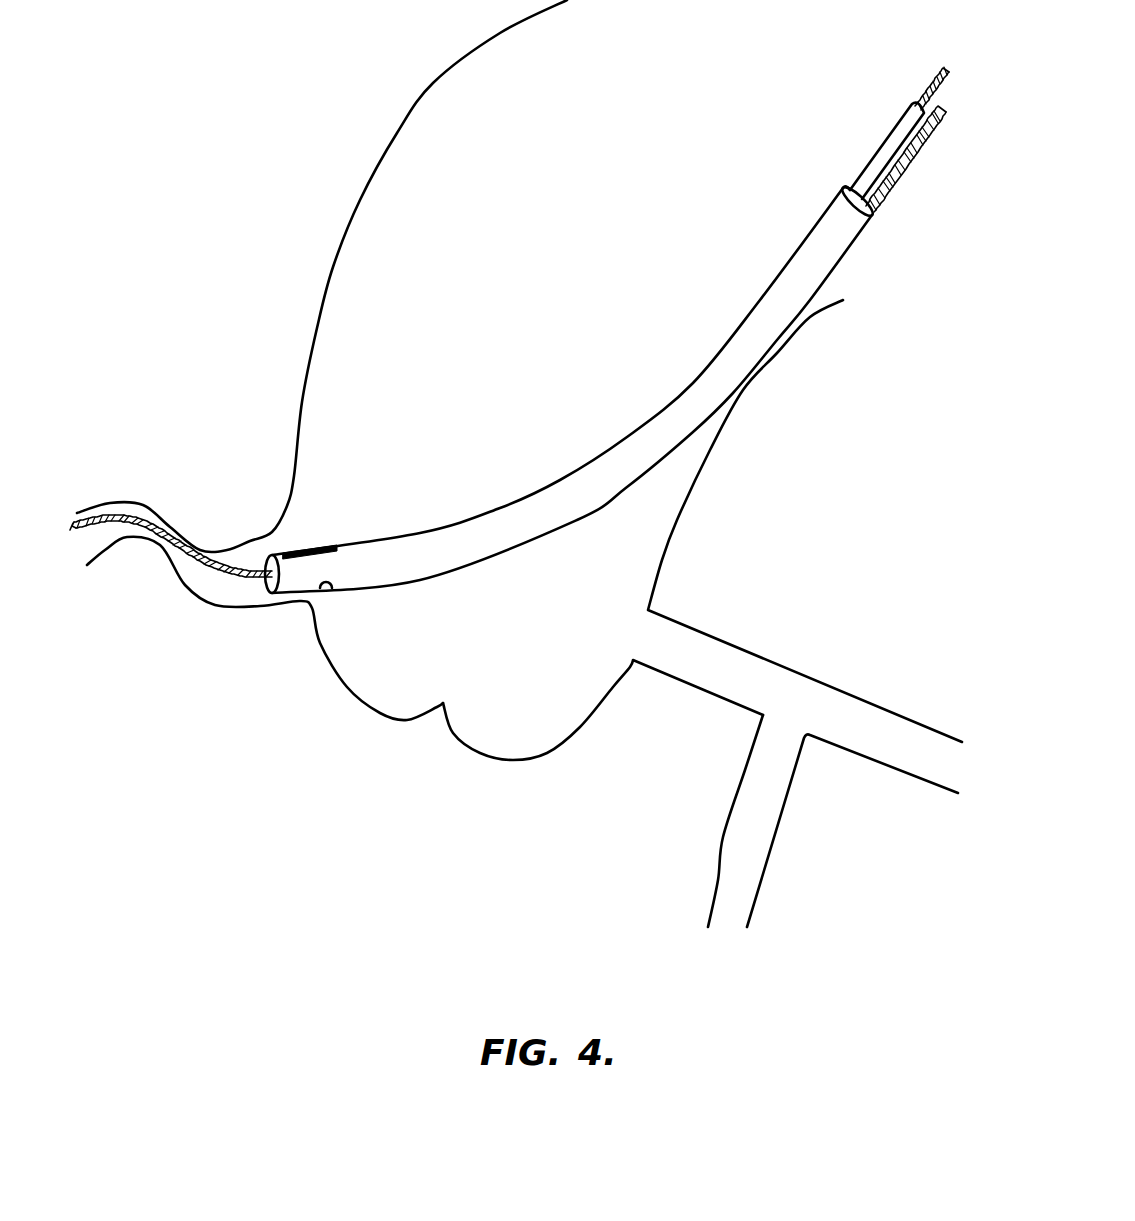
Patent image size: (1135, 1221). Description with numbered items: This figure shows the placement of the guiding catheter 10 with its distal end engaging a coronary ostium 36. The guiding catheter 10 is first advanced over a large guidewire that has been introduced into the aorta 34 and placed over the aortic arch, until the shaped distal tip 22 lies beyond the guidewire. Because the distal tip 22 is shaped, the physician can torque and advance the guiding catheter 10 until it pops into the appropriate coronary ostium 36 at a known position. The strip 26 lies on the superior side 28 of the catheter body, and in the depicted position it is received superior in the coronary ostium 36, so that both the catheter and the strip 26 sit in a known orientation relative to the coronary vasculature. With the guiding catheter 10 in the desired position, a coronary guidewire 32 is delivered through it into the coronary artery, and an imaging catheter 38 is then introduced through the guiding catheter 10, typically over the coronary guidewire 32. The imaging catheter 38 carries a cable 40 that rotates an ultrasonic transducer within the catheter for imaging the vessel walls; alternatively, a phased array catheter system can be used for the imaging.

The guiding catheter 10 is at (565, 477).
The distal tip 22 is at (330, 590).
The strip 26 is at (323, 547).
The superior side 28 is at (373, 553).
The coronary guidewire 32 is at (223, 562).
The aorta 34 is at (425, 167).
The coronary ostium 36 is at (193, 580).
The imaging catheter 38 is at (898, 123).
The cable 40 is at (933, 80).